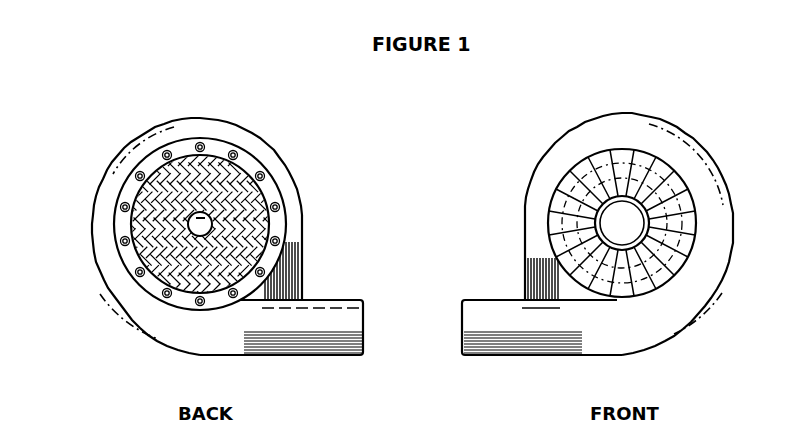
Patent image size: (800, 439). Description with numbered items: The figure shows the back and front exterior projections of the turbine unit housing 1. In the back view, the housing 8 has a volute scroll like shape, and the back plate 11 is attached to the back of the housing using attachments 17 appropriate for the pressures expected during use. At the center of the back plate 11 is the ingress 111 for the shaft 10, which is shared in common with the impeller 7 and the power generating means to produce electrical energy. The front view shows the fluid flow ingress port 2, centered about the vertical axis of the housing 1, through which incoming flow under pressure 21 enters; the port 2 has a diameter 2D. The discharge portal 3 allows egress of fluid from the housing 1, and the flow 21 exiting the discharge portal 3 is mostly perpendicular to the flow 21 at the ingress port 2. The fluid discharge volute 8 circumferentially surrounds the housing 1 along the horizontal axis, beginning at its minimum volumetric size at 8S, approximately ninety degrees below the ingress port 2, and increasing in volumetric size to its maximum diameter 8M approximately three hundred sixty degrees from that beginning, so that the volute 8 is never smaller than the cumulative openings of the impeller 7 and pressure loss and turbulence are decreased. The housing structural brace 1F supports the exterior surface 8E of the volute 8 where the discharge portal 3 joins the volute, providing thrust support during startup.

The turbine unit housing 1 is at (412, 238).
The fluid flow ingress port 2 is at (632, 213).
The diameter of ingress port 2D is at (650, 243).
The discharge portal 3 is at (363, 337).
The impeller 7 is at (582, 168).
The fluid discharge volute 8 is at (148, 130).
The exterior surface of volute 8E is at (300, 307).
The maximum diameter of volute 8M is at (203, 327).
The minimum volumetric size of volute 8S is at (540, 283).
The shaft 10 is at (205, 218).
The back plate 11 is at (167, 212).
The ingress for shaft 111 is at (213, 214).
The attachments 17 is at (132, 258).
The housing structural brace 1F is at (302, 278).
The fluid flow under pressure 21 is at (408, 322).